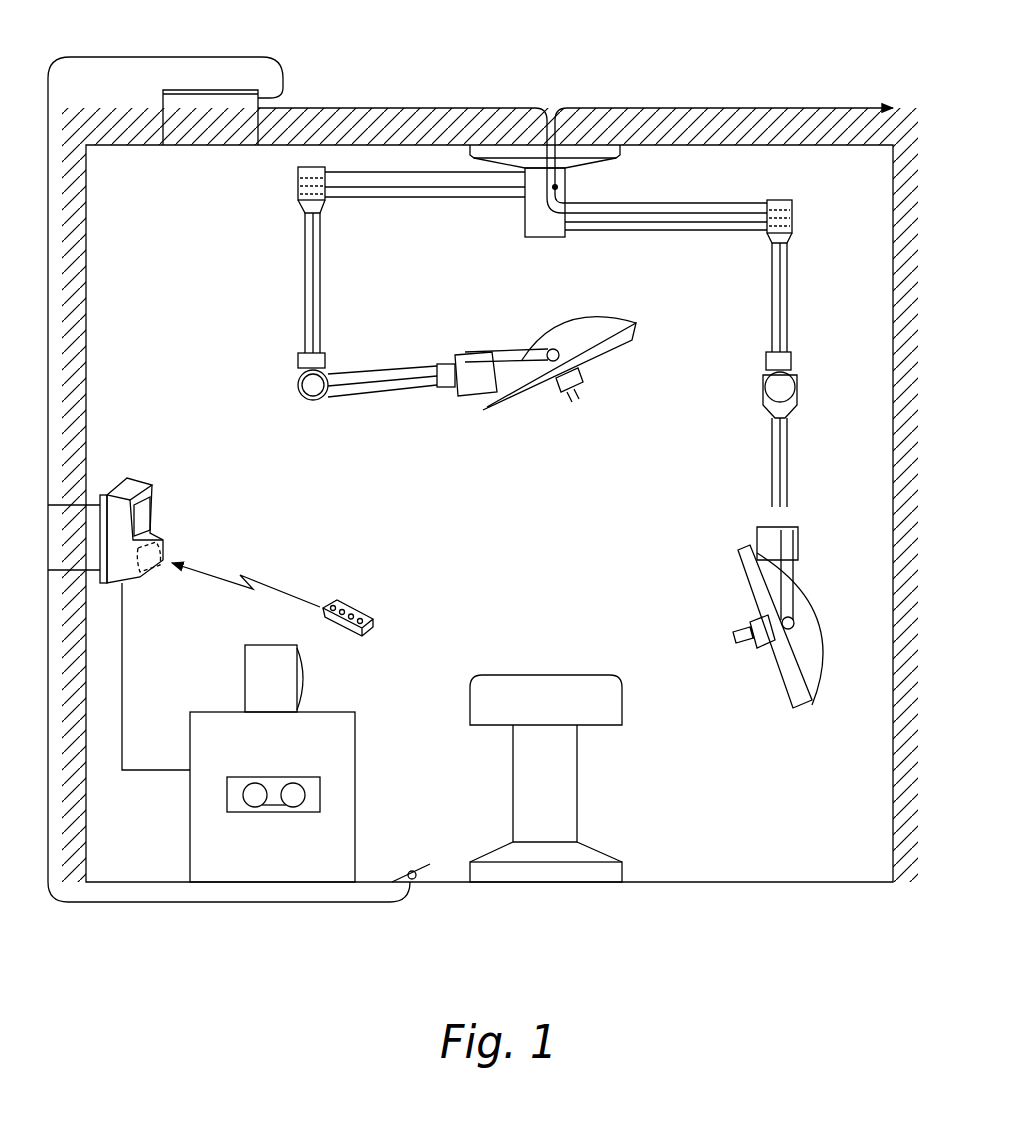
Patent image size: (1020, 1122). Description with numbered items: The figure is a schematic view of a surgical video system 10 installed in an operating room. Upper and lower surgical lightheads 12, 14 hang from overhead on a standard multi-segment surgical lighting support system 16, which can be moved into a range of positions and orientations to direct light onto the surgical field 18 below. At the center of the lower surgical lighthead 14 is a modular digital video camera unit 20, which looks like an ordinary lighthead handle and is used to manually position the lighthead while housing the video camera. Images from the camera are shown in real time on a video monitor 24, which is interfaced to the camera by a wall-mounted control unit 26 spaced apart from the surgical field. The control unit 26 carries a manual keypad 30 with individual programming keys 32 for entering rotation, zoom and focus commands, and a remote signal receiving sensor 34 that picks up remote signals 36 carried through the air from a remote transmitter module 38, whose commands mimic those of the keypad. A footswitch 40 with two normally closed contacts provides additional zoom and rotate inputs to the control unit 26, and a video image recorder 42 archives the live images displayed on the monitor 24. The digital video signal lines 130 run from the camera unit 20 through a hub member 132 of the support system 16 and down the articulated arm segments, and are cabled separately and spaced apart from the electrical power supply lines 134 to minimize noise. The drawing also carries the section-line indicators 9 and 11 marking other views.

The surgical video system 10 is at (243, 934).
The digital video signal lines 130 is at (172, 57).
The electrical power supply lines 134 is at (748, 108).
The section line 9 is at (548, 90).
The multi-segment surgical lighting support system 16 is at (520, 212).
The hub member 132 is at (532, 225).
The upper surgical lighthead 12 is at (522, 409).
The lower surgical lighthead 14 is at (783, 702).
The modular digital video camera unit 20 is at (744, 659).
The section line 11 is at (875, 415).
The control unit 26 is at (160, 458).
The manual keypad 30 is at (160, 500).
The programming keys 32 is at (148, 517).
The remote signal receiving sensor 34 is at (157, 562).
The remote signals 36 is at (275, 587).
The remote transmitter module 38 is at (351, 603).
The video monitor 24 is at (306, 664).
The video image recorder 42 is at (277, 777).
The footswitch 40 is at (430, 863).
The surgical field 18 is at (560, 675).